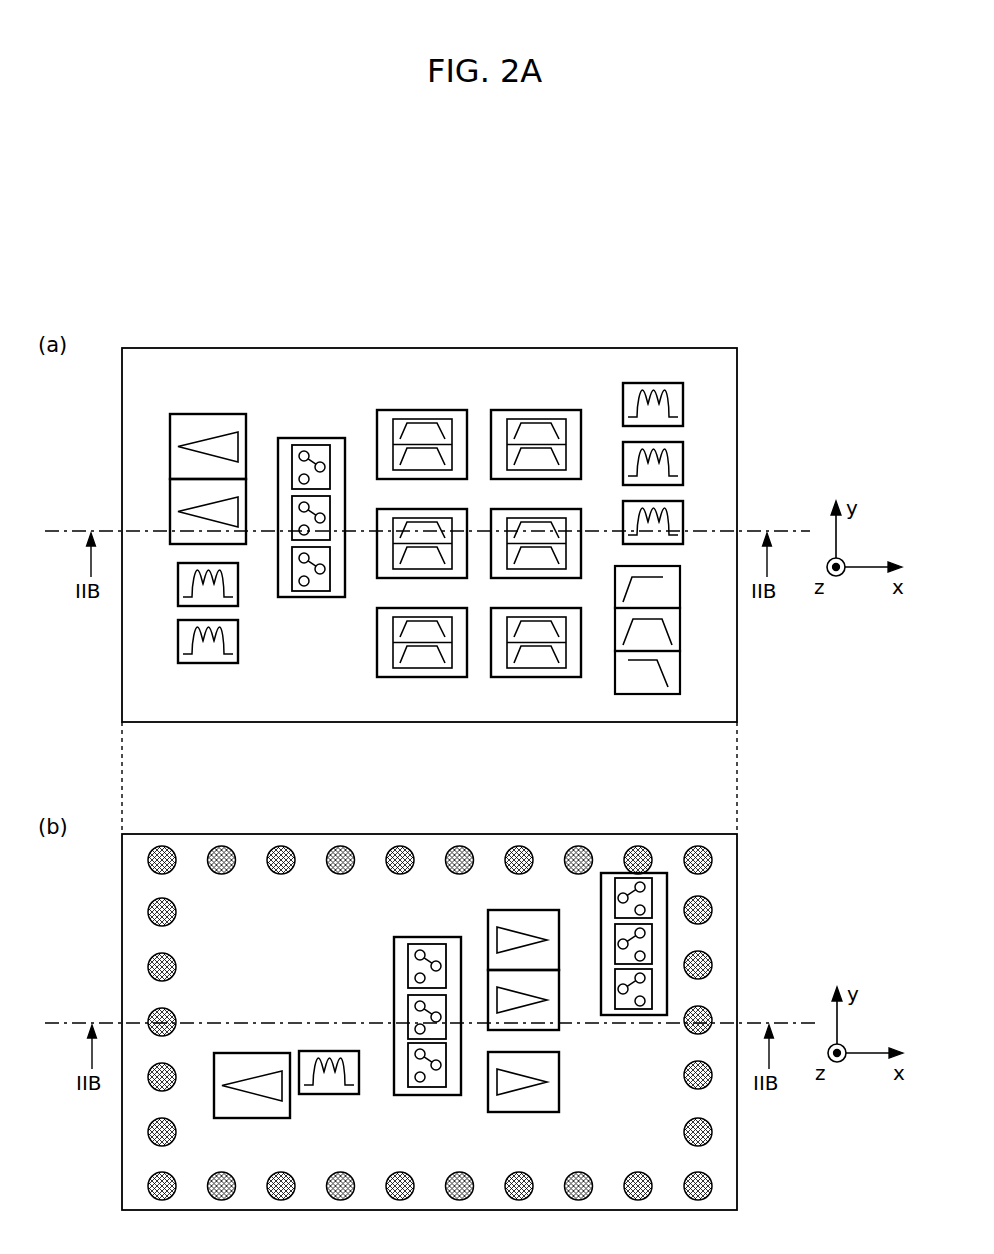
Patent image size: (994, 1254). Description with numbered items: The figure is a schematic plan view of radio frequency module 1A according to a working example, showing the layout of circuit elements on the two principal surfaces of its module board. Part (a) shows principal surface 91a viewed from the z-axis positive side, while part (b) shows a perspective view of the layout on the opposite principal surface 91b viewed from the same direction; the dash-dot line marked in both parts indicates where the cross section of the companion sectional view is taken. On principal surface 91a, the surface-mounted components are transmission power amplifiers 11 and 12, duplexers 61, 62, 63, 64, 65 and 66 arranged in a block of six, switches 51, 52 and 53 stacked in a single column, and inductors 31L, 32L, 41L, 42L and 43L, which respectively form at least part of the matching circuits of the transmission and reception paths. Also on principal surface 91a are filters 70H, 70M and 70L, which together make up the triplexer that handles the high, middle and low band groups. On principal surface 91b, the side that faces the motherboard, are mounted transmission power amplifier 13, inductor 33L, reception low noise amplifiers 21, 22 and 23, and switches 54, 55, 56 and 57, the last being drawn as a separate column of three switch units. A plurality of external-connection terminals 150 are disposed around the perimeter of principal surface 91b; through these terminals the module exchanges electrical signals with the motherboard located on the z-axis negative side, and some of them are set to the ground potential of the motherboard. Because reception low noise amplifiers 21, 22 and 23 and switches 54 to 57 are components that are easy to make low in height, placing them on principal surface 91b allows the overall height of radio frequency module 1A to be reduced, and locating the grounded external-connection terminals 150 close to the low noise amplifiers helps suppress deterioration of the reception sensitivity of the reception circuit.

The radio frequency module 1A is at (821, 374).
The principal surface 91a is at (740, 362).
The principal surface 91b is at (740, 848).
The transmission power amplifier 11 is at (192, 414).
The transmission power amplifier 12 is at (174, 508).
The transmission power amplifier 13 is at (235, 1053).
The reception low noise amplifier 21 is at (559, 923).
The reception low noise amplifier 22 is at (559, 993).
The reception low noise amplifier 23 is at (559, 1075).
The inductor 31L is at (178, 581).
The inductor 32L is at (178, 638).
The inductor 33L is at (327, 1093).
The inductor 41L is at (682, 399).
The inductor 42L is at (682, 457).
The inductor 43L is at (682, 516).
The switch 51 is at (302, 445).
The switch 52 is at (292, 512).
The switch 53 is at (292, 571).
The switch 54 is at (408, 958).
The switch 55 is at (408, 1010).
The switch 56 is at (408, 1068).
The switch 57 is at (667, 893).
The duplexer 61 is at (432, 410).
The duplexer 62 is at (545, 410).
The duplexer 63 is at (432, 509).
The duplexer 64 is at (545, 509).
The duplexer 65 is at (432, 608).
The duplexer 66 is at (545, 608).
The filter 70H is at (680, 583).
The filter 70M is at (680, 626).
The filter 70L is at (680, 668).
The external-connection terminal 150 is at (153, 902).